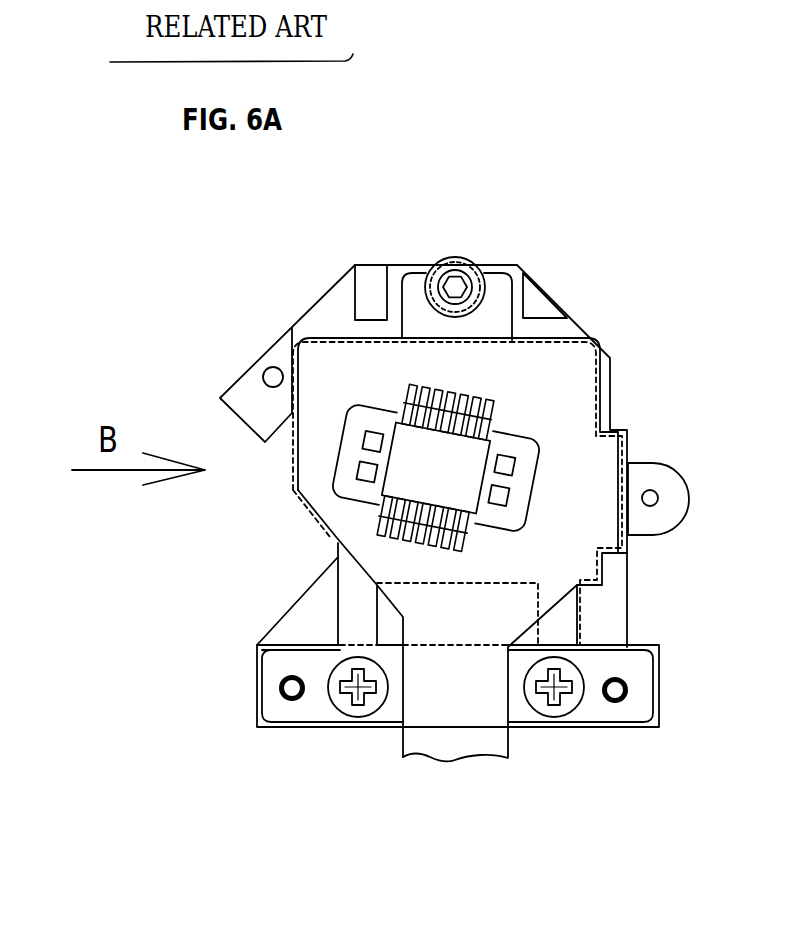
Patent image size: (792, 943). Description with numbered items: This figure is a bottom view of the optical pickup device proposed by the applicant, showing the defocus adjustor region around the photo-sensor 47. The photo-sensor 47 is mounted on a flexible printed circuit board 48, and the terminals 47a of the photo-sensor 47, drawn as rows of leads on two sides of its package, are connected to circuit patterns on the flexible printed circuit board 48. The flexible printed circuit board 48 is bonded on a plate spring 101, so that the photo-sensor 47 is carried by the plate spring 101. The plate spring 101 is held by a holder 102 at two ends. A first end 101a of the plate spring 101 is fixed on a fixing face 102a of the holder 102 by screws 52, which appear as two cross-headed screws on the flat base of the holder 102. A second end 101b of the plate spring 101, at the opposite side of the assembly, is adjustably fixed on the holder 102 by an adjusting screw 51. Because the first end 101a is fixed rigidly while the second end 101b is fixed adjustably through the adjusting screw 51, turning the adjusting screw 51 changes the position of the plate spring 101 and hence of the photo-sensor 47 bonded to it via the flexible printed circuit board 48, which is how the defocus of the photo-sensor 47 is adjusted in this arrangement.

The photo-sensor 47 is at (514, 399).
The terminals 47a is at (493, 407).
The flexible printed circuit board 48 is at (593, 533).
The adjusting screw 51 is at (463, 254).
The screws 52 is at (370, 703).
The plate spring 101 is at (353, 590).
The first end 101a is at (292, 708).
The second end 101b is at (500, 288).
The holder 102 is at (305, 622).
The fixing face 102a is at (608, 710).